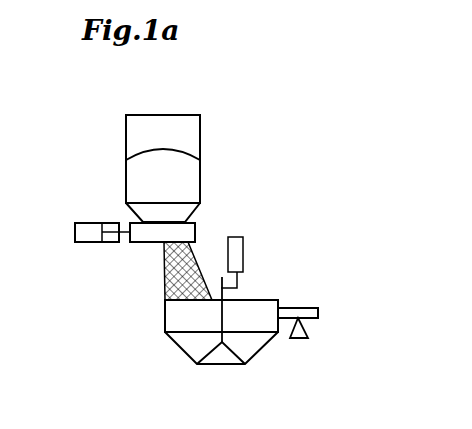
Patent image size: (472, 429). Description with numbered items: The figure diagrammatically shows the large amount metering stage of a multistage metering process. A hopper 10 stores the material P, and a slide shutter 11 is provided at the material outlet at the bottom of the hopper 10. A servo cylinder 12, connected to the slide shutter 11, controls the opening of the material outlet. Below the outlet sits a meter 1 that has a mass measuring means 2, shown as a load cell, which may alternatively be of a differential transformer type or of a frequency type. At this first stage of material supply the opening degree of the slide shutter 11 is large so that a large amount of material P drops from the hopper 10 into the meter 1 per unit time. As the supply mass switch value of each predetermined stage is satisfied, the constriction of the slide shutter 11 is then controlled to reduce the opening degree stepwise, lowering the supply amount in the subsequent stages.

The meter 1 is at (258, 355).
The mass measuring means (load cell) 2 is at (320, 312).
The hopper 10 is at (190, 137).
The slide shutter 11 is at (198, 230).
The servo cylinder 12 is at (80, 243).
The material P is at (135, 172).